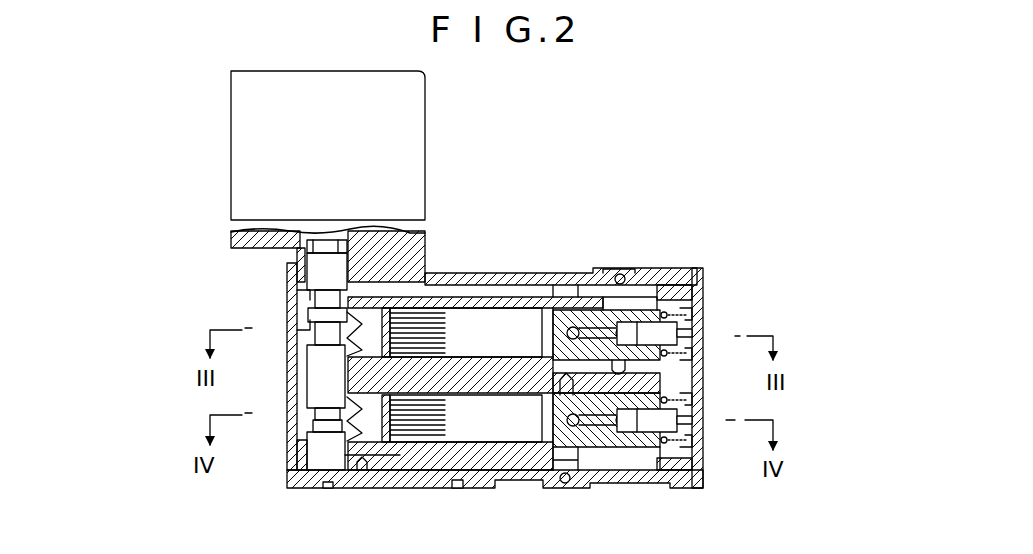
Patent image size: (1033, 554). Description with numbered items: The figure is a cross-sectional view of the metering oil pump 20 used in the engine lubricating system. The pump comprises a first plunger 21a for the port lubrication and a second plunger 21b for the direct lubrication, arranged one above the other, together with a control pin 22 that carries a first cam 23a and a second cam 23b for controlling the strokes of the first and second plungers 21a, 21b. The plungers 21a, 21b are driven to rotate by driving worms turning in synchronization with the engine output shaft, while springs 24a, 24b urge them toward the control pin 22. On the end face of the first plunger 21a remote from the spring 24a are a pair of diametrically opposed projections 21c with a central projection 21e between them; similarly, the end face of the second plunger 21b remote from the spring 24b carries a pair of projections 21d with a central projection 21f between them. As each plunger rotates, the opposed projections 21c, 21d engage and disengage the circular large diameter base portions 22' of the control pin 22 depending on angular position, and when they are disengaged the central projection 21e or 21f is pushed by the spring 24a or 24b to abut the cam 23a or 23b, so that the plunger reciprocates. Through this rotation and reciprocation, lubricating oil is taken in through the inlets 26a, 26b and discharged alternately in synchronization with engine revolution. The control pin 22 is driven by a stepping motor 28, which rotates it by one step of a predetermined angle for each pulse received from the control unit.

The stepping motor 28 is at (427, 158).
The metering oil pump 20 is at (522, 266).
The first plunger 21a is at (481, 316).
The second plunger 21b is at (517, 428).
The projections 21c is at (390, 345).
The projections 21d is at (390, 420).
The central projection 21e is at (330, 316).
The central projection 21f is at (307, 437).
The control pin 22 is at (291, 330).
The large diameter base portions 22' is at (292, 330).
The first cam 23a is at (327, 337).
The second cam 23b is at (328, 417).
The spring 24a is at (663, 312).
The spring 24b is at (667, 443).
The inlet 26a is at (618, 302).
The inlet 26b is at (603, 460).